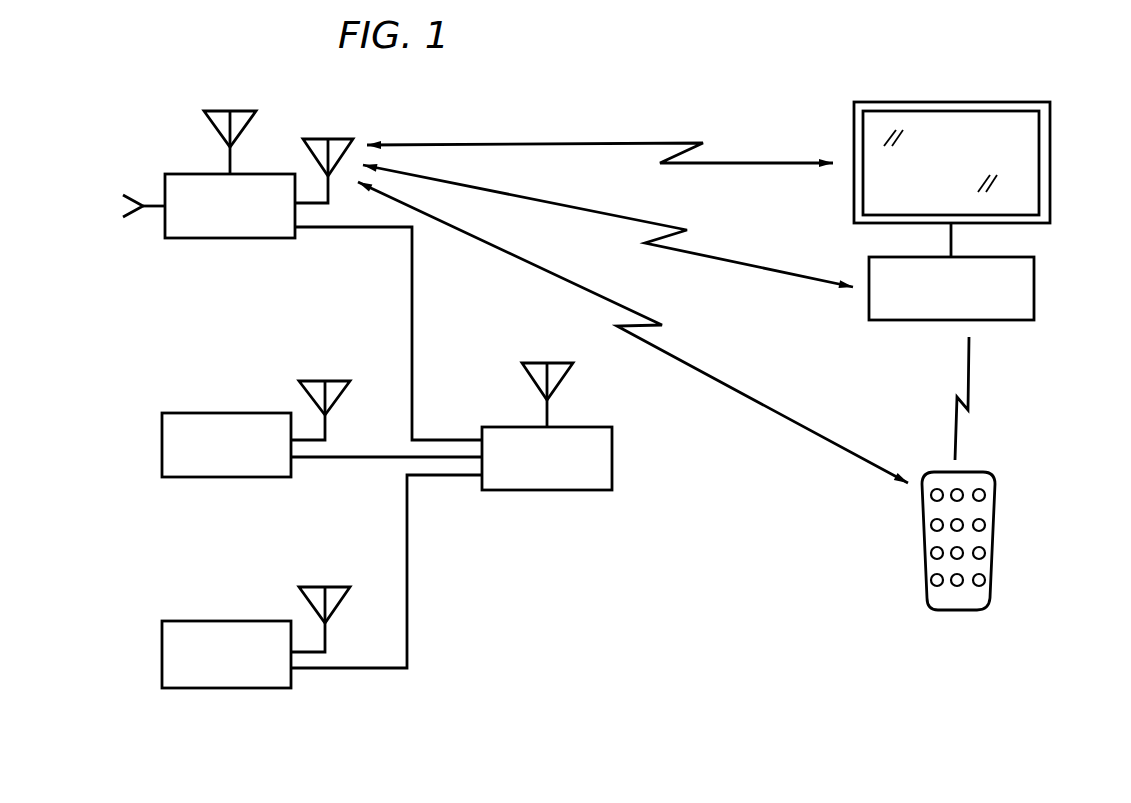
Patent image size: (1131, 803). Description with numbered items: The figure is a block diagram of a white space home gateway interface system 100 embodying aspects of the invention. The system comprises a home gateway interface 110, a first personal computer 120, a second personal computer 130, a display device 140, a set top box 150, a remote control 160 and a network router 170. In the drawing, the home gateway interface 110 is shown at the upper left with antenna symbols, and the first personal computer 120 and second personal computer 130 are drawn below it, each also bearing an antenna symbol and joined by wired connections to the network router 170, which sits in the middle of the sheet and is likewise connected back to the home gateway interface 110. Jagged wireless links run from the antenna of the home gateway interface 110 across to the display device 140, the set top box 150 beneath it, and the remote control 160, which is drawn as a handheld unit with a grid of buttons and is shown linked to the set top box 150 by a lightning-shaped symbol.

The white space home gateway interface system 100 is at (598, 78).
The home gateway interface 110 is at (225, 238).
The first personal computer 120 is at (218, 477).
The second personal computer 130 is at (218, 688).
The display device 140 is at (952, 102).
The set top box 150 is at (1034, 293).
The remote control 160 is at (994, 537).
The network router 170 is at (547, 490).